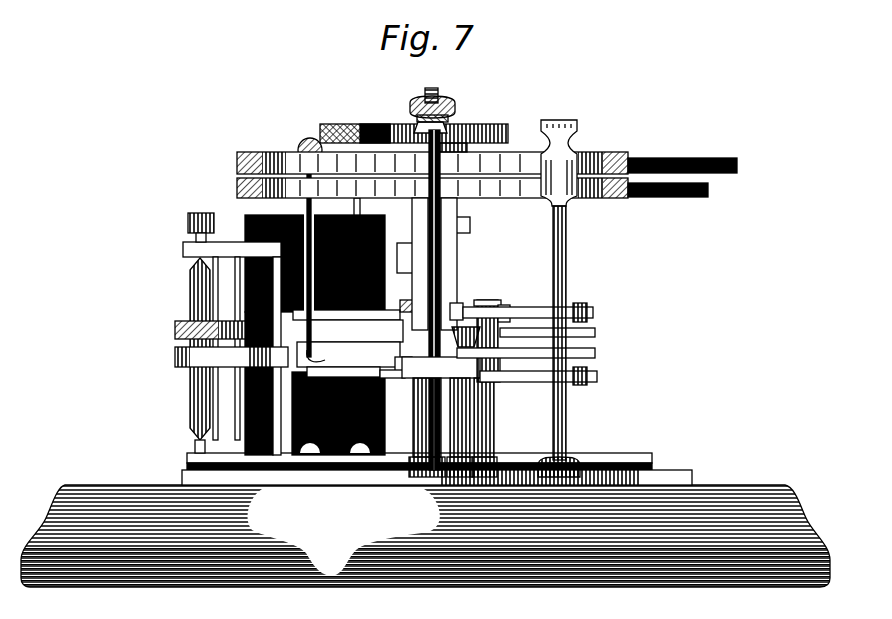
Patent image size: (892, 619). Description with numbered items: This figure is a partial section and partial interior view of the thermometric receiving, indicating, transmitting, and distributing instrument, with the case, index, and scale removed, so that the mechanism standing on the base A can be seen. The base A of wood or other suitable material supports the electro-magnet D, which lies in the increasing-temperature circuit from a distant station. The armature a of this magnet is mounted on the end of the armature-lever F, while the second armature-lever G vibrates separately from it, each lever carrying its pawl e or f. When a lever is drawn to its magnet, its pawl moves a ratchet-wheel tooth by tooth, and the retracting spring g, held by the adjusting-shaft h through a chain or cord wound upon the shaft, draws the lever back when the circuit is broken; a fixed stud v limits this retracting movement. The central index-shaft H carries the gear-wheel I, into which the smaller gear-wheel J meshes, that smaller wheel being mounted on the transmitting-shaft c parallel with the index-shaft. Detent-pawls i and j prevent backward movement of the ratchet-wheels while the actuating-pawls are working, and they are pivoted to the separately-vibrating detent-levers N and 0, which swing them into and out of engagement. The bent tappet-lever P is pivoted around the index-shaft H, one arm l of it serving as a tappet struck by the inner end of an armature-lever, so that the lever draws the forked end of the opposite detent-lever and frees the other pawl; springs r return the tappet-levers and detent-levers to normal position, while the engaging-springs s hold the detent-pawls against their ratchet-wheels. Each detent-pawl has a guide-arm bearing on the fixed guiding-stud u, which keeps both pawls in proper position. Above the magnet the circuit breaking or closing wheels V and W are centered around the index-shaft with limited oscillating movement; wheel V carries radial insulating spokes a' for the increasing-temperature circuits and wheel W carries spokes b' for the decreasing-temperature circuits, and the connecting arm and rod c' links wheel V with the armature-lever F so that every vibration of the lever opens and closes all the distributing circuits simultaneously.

The base A is at (426, 536).
The electro-magnet D is at (284, 325).
The increasing-temperature circuit breaking or closing wheel V is at (432, 149).
The decreasing-temperature circuit breaking or closing wheel W is at (237, 184).
The radial spokes a' is at (682, 154).
The radial arms or spokes b' is at (683, 192).
The index-shaft H is at (435, 99).
The smaller gear-wheel J is at (446, 131).
The gear-wheel I is at (414, 129).
The connecting arm and rod c' is at (303, 242).
The transmitting-shaft c is at (316, 351).
The adjusting-shaft h is at (365, 207).
The pawl e is at (448, 215).
The fixed stud v is at (240, 305).
The armature a is at (226, 348).
The armature-lever G is at (276, 327).
The armature-lever F is at (276, 359).
The tappet arm l is at (413, 378).
The pawl f is at (405, 277).
The tappet-lever P is at (458, 380).
The fixed guiding-stud u is at (486, 343).
The spring r is at (480, 310).
The detent-pawl j is at (502, 311).
The detent-pawl i is at (485, 380).
The engaging-spring s is at (521, 308).
The detent-lever 0 is at (597, 333).
The detent-lever N is at (598, 352).
The spring g is at (538, 376).